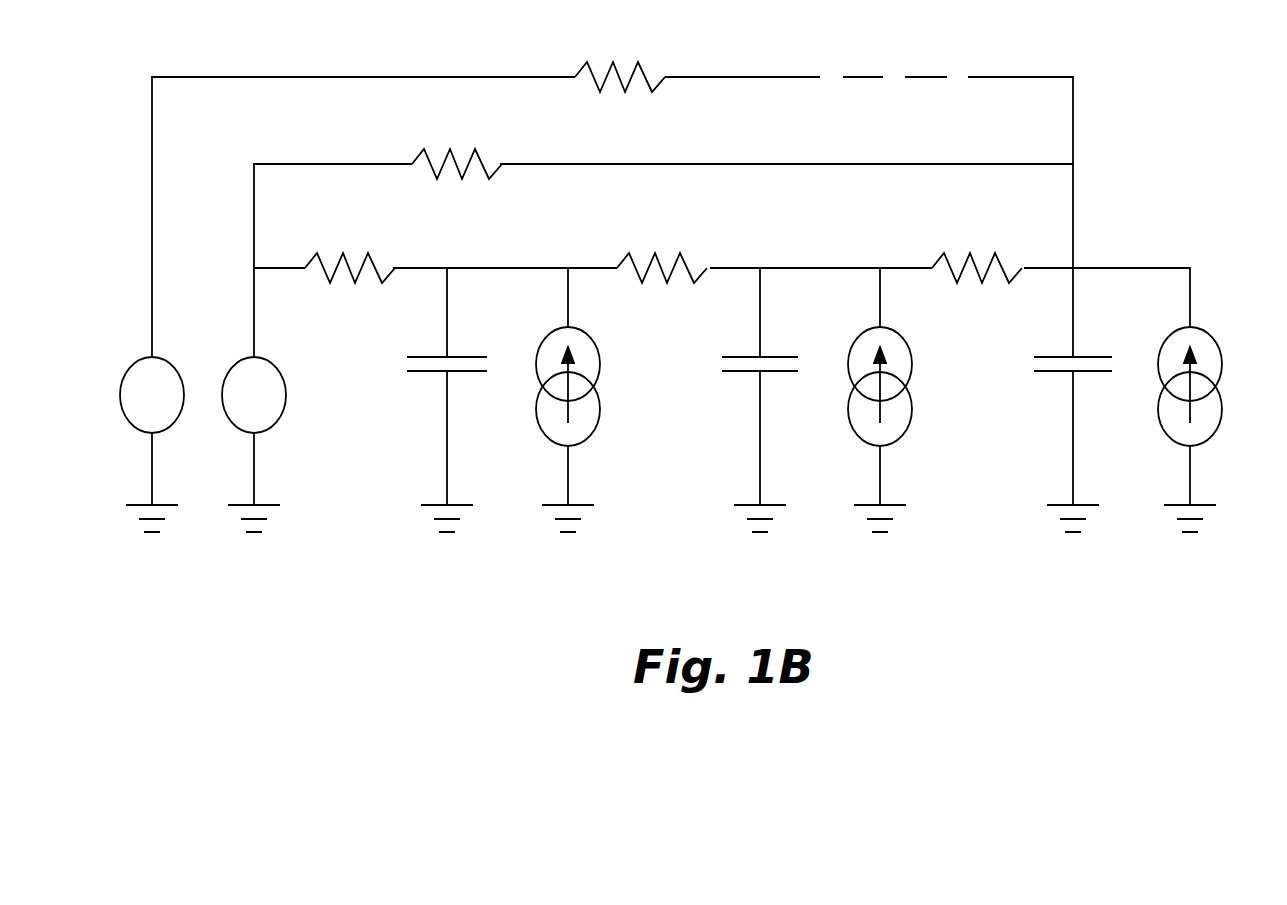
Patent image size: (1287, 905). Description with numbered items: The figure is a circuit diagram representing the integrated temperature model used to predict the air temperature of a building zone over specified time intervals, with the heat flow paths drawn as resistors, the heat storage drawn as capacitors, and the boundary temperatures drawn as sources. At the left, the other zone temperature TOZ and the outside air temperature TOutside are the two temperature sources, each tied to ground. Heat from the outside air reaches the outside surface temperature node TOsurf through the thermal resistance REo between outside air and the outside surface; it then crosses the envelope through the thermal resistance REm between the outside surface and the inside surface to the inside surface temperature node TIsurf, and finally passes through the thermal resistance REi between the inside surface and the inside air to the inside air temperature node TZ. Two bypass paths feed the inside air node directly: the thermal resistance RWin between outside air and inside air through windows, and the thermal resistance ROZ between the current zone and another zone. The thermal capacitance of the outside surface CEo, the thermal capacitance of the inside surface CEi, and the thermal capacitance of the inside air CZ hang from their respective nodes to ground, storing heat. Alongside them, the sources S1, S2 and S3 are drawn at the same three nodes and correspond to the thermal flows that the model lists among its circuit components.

The thermal resistance between a current zone and another zone ROZ is at (620, 48).
The thermal resistance between outside air and inside air through windows RWin is at (456, 136).
The thermal resistance between outside air and the outside surface REo is at (350, 239).
The outside surface temperature TOsurf is at (505, 243).
The thermal resistance between the outside surface and the inside surface REm is at (662, 240).
The inside surface temperature TIsurf is at (821, 243).
The thermal resistance between the inside surface and the inside air REi is at (973, 239).
The inside air temperature TZ is at (1107, 243).
The other zone temperature TOZ is at (161, 444).
The outside air temperature TOutside is at (294, 444).
The thermal capacitance of the outside surface CEo is at (436, 444).
The heat flow source 1 S1 is at (590, 429).
The thermal capacitance of the inside surface CEi is at (745, 444).
The heat flow source 2 S2 is at (901, 429).
The thermal capacitance inside air CZ is at (1059, 444).
The heat flow source 3 S3 is at (1210, 429).